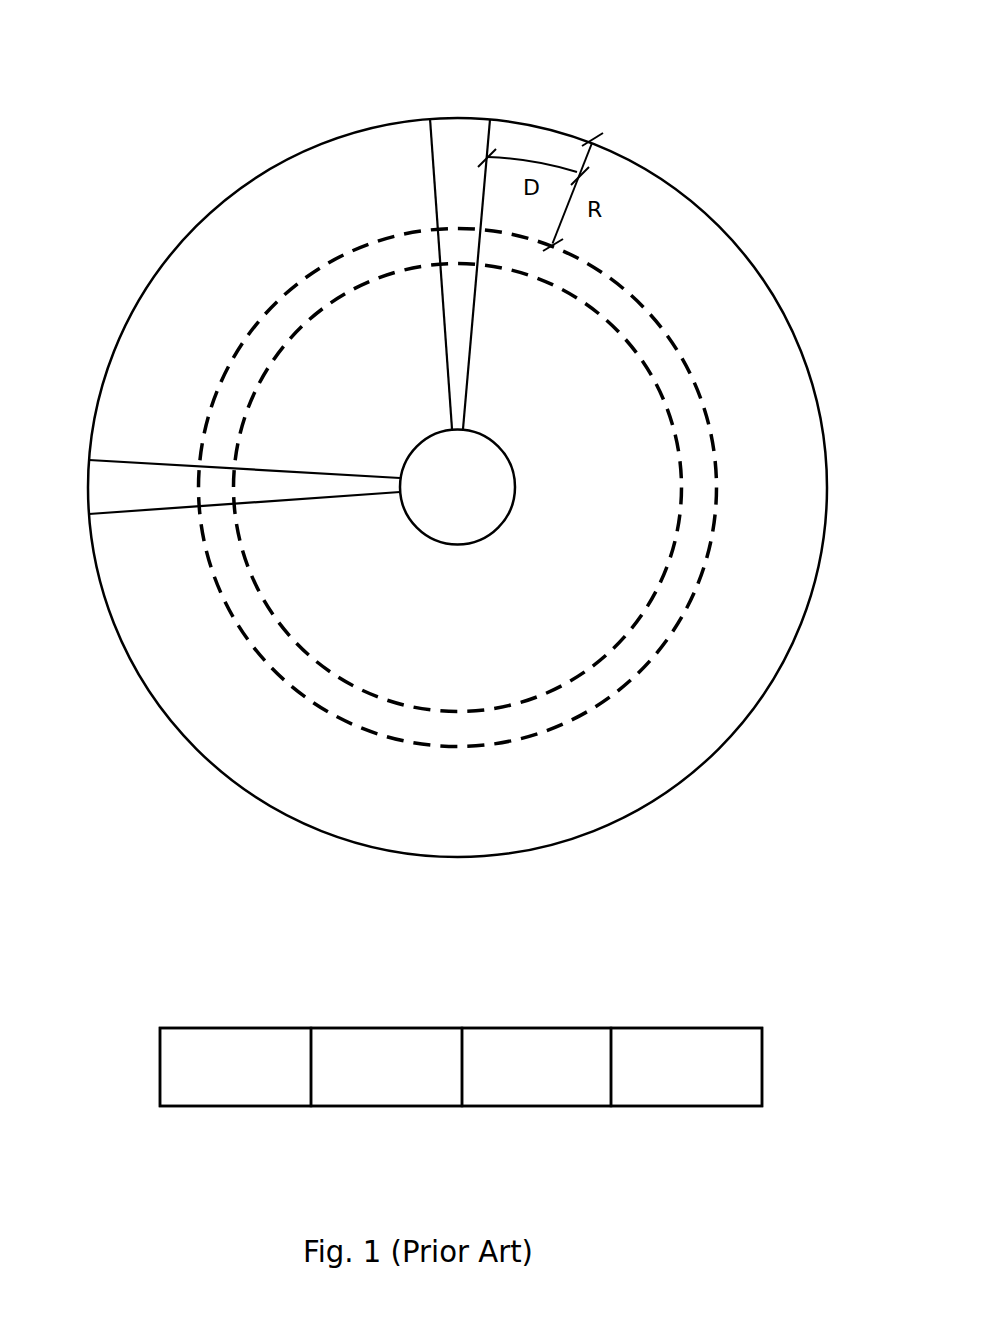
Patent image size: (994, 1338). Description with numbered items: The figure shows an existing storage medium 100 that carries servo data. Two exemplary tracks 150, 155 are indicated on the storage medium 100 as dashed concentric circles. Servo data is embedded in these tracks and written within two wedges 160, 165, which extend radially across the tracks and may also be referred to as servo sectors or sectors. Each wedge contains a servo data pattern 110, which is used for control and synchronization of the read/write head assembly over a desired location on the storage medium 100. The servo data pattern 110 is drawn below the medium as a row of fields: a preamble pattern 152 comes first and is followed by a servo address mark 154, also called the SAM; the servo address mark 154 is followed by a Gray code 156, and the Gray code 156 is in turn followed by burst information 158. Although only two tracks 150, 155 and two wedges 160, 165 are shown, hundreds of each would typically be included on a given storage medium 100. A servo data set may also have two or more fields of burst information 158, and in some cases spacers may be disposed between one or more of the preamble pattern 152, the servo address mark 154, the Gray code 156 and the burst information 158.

The storage medium 100 is at (90, 66).
The servo data pattern 110 is at (603, 986).
The track 150 is at (622, 287).
The track 155 is at (637, 353).
The wedge 160 is at (456, 123).
The wedge 165 is at (96, 490).
The preamble pattern 152 is at (215, 1097).
The servo address mark 154 is at (366, 1097).
The Gray code 156 is at (516, 1097).
The burst information 158 is at (666, 1097).